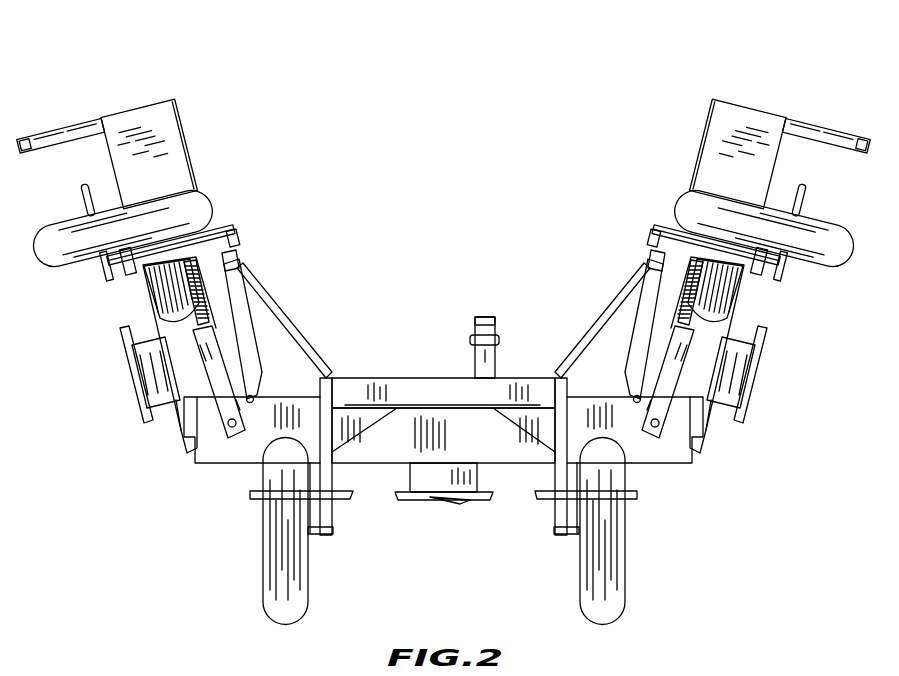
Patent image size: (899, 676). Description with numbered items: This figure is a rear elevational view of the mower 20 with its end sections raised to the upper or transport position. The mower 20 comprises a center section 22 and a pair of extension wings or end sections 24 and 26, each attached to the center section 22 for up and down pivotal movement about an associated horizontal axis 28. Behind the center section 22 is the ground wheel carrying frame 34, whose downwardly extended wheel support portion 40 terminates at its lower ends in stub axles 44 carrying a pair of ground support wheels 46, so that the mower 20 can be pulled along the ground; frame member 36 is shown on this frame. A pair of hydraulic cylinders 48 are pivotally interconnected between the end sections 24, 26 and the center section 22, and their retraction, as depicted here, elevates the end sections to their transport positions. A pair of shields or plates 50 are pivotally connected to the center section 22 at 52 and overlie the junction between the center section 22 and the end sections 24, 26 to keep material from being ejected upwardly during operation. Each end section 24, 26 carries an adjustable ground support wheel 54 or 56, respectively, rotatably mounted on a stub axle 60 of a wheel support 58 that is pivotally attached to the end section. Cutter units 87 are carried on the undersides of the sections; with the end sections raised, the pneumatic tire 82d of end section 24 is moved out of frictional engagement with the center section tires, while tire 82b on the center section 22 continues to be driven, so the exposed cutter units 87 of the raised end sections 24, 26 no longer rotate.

The mower 20 is at (385, 235).
The center section 22 is at (455, 352).
The end section 24 is at (738, 96).
The end section 26 is at (97, 110).
The horizontal axis 28 is at (225, 436).
The ground wheel carrying frame 34 is at (373, 378).
The frame member 36 is at (415, 394).
The downwardly extended wheel support portion 40 is at (335, 510).
The stub axle 44 is at (318, 536).
The ground support wheel 46 is at (272, 552).
The hydraulic cylinder 48 is at (260, 288).
The shield or plate 50 is at (253, 336).
The pivotal connection 52 is at (254, 398).
The adjustable ground support wheel 54 is at (840, 265).
The adjustable ground support wheel 56 is at (205, 207).
The wheel support 58 is at (140, 300).
The stub axle 60 is at (126, 268).
The pneumatic tire 82b is at (177, 430).
The pneumatic tire 82d is at (700, 448).
The cutter unit 87 is at (72, 204).